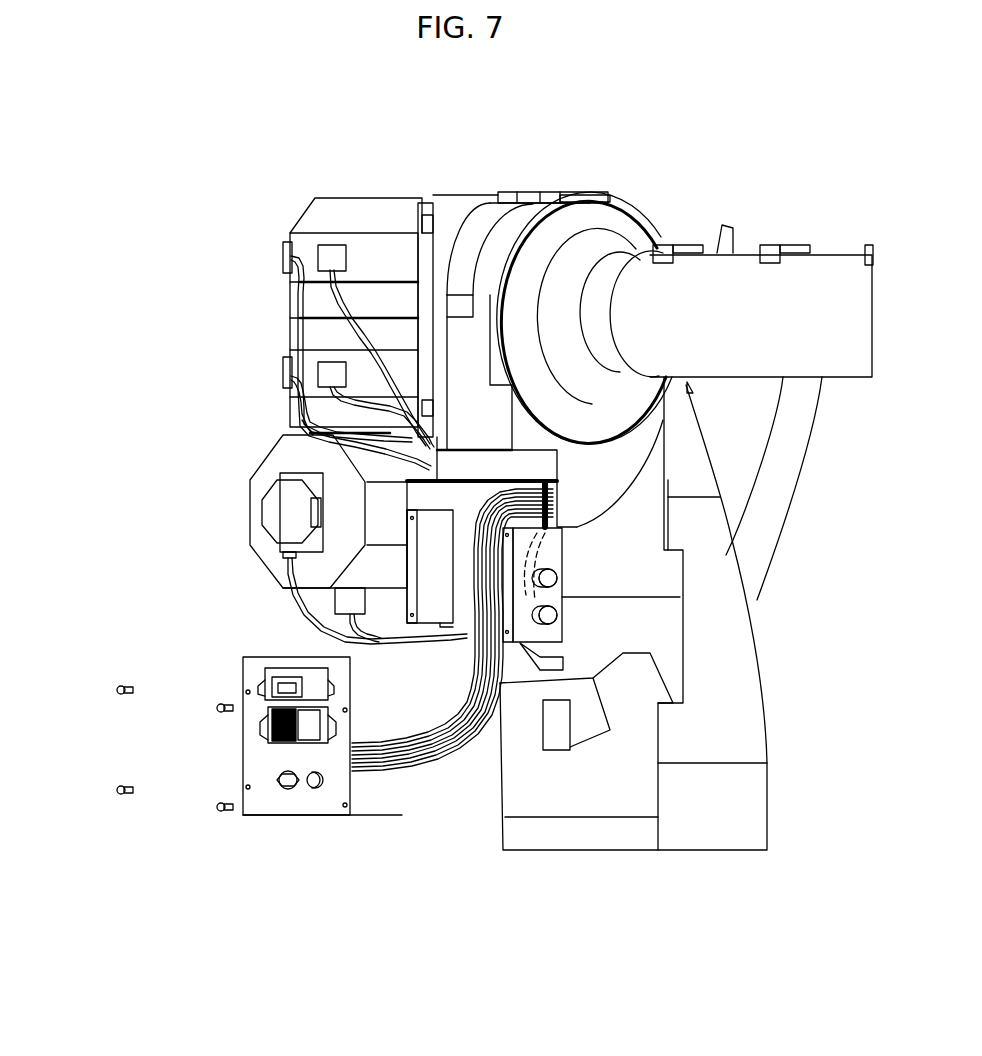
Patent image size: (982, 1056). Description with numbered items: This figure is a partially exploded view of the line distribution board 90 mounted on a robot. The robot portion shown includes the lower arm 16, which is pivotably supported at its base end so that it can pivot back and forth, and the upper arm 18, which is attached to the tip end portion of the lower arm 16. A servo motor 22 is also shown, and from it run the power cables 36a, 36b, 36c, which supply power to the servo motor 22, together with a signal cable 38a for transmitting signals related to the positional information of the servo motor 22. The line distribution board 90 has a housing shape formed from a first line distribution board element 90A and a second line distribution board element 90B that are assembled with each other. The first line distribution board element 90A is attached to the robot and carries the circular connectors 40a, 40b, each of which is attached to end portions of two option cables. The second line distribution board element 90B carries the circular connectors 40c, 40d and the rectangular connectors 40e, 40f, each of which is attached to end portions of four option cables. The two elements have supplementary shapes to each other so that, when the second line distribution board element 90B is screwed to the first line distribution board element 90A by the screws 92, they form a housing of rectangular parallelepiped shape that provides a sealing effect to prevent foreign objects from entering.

The servo motor 22 is at (356, 198).
The signal cable 38a is at (358, 333).
The power cable 36a is at (297, 310).
The power cable 36b is at (288, 388).
The power cable 36c is at (297, 604).
The upper arm 18 is at (833, 252).
The lower arm 16 is at (773, 800).
The circular connector 40a is at (563, 613).
The circular connector 40b is at (562, 575).
The circular connector 40c is at (315, 790).
The circular connector 40d is at (286, 790).
The rectangular connector 40e is at (257, 681).
The rectangular connector 40f is at (352, 725).
The line distribution board 90 is at (403, 736).
The first line distribution board element 90A is at (546, 650).
The second line distribution board element 90B is at (322, 799).
The screws 92 is at (217, 807).